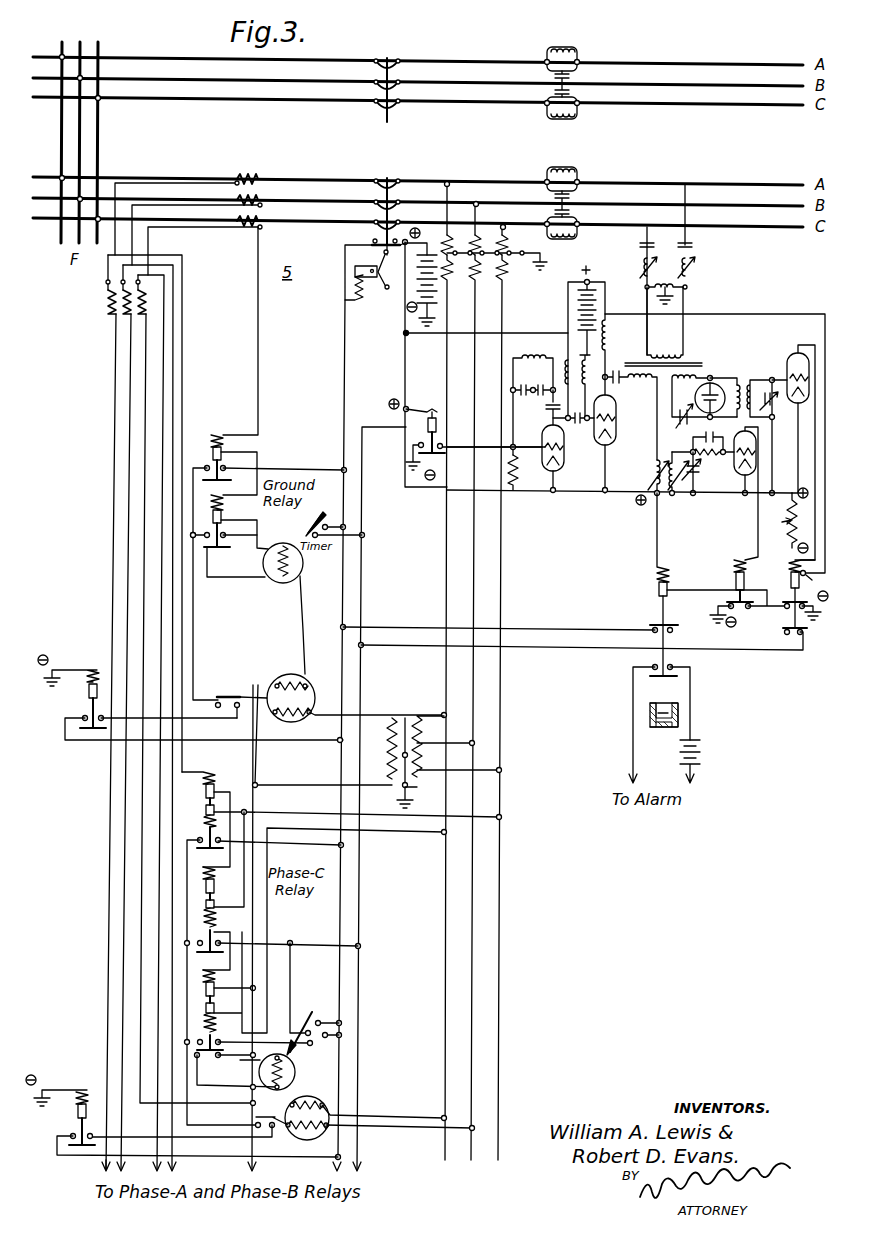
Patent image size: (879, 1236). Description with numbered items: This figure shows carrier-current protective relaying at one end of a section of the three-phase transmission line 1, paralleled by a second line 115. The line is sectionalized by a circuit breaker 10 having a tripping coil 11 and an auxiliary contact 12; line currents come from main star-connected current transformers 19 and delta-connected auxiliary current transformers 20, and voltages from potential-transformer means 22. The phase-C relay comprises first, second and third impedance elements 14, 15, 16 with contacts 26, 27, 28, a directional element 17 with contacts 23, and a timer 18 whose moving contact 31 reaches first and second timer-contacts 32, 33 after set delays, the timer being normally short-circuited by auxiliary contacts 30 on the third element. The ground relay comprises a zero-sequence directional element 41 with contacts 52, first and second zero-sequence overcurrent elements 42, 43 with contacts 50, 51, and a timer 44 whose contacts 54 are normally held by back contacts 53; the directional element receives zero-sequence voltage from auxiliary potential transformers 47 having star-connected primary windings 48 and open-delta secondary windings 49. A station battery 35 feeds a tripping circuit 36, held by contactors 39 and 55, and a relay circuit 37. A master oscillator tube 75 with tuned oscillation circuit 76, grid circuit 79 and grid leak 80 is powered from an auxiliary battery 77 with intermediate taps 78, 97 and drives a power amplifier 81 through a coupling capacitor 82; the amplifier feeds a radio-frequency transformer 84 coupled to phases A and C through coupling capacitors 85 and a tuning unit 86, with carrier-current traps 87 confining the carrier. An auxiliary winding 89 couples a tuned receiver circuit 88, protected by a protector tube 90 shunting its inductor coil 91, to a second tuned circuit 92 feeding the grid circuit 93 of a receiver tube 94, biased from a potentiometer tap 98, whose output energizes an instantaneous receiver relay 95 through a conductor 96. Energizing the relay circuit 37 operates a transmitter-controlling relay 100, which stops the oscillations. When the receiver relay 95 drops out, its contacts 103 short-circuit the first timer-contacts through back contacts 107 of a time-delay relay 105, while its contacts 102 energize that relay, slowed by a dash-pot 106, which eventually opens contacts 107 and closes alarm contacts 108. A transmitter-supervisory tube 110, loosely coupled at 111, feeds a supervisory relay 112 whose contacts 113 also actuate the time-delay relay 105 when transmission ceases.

The transmission line 1 is at (740, 176).
The circuit breaker 10 is at (388, 180).
The tripping coil 11 is at (355, 290).
The auxiliary contact 12 is at (372, 243).
The first impedance element 14 is at (256, 948).
The second impedance element 15 is at (264, 909).
The third impedance element 16 is at (226, 1010).
The directional wattmeter element 17 is at (328, 1100).
The timer 18 is at (302, 1070).
The main current transformers 19 is at (244, 230).
The auxiliary current transformers 20 is at (106, 300).
The potential-transformer means 22 is at (508, 278).
The contacts of directional element 23 is at (280, 1135).
The contacts of first impedance element 26 is at (200, 838).
The contacts of second impedance element 27 is at (200, 942).
The contacts of third impedance element 28 is at (200, 1041).
The contacts 30 is at (198, 1060).
The moving contact element 31 is at (310, 1018).
The first timer-contacts 32 is at (320, 1020).
The second timer-contacts 33 is at (312, 1043).
The station battery 35 is at (440, 292).
The tripping circuit 36 is at (342, 455).
The relay circuit 37 is at (368, 443).
The contactor 39 is at (82, 1092).
The zero-sequence directional wattmeter element 41 is at (312, 682).
The first zero-sequence overcurrent element 42 is at (268, 463).
The second zero-sequence overcurrent element 43 is at (230, 522).
The zero-sequence timer 44 is at (304, 558).
The auxiliary potential transformers 47 is at (405, 716).
The star-connected primary windings 48 is at (419, 730).
The open delta-connected secondary windings 49 is at (392, 718).
The contacts of first overcurrent element 50 is at (207, 480).
The contacts of second overcurrent element 51 is at (207, 532).
The contacts of zero-sequence directional element 52 is at (228, 690).
The back contacts 53 is at (218, 550).
The timer-contacts 54 is at (338, 512).
The contactor 55 is at (95, 680).
The master oscillator tube 75 is at (570, 470).
The tuned oscillation circuit 76 is at (533, 405).
The auxiliary battery 77 is at (578, 305).
The intermediate tap 78 is at (578, 330).
The oscillator grid circuit 79 is at (516, 448).
The grid leak 80 is at (516, 485).
The power amplifier 81 is at (620, 415).
The coupling capacitor 82 is at (578, 425).
The radio-frequency transformer 84 is at (637, 362).
The coupling capacitors 85 is at (700, 245).
The tuning unit 86 is at (700, 268).
The carrier-current traps 87 is at (578, 205).
The tuned receiver circuit 88 is at (728, 378).
The auxiliary winding 89 is at (697, 378).
The protector tube 90 is at (705, 385).
The inductor coil 91 is at (740, 385).
The second tuned circuit 92 is at (765, 378).
The grid circuit of receiver tube 93 is at (775, 410).
The receiver tube 94 is at (798, 345).
The instantaneous receiver relay 95 is at (788, 565).
The conductor 96 is at (812, 583).
The intermediate tap 97 is at (605, 312).
The potentiometer tap 98 is at (782, 522).
The transmitter-controlling relay 100 is at (430, 415).
The contacts of receiver relay 102 is at (783, 600).
The contacts of receiver relay 103 is at (783, 630).
The time-delay relay 105 is at (674, 630).
The dash-pot 106 is at (660, 728).
The back contacts of time-delay relay 107 is at (652, 628).
The contacts of time-delay relay 108 is at (650, 665).
The transmitter-supervisory tube 110 is at (732, 465).
The coupling 111 is at (662, 497).
The transmitter-supervisory relay 112 is at (742, 555).
The contacts of supervisory relay 113 is at (718, 603).
The second line 115 is at (650, 105).